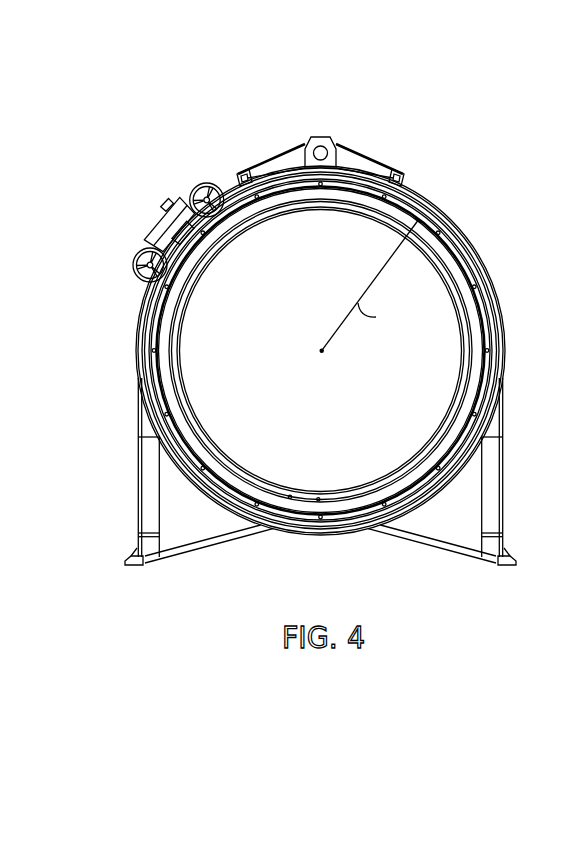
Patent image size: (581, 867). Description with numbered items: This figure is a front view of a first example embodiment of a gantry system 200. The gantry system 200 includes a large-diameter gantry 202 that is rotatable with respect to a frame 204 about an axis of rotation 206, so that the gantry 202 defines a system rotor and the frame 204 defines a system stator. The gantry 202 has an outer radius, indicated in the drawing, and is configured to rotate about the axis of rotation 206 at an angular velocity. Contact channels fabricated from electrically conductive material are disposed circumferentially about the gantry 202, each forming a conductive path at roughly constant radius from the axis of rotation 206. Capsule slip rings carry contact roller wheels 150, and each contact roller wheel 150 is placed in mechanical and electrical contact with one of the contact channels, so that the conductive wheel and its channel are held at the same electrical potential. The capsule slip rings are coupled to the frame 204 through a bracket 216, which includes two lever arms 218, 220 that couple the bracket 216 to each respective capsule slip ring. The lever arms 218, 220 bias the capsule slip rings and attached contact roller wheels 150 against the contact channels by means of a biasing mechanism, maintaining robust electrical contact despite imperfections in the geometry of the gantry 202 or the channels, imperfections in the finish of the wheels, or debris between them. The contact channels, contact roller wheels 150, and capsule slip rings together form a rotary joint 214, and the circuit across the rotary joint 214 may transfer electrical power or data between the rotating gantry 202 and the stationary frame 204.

The gantry system 200 is at (312, 334).
The gantry 202 is at (467, 259).
The frame 204 is at (492, 483).
The axis of rotation 206 is at (322, 352).
The rotary joint 214 is at (164, 240).
The bracket 216 is at (190, 240).
The lever arm 218 is at (186, 208).
The lever arm 220 is at (155, 231).
The contact roller wheel 150 is at (205, 183).